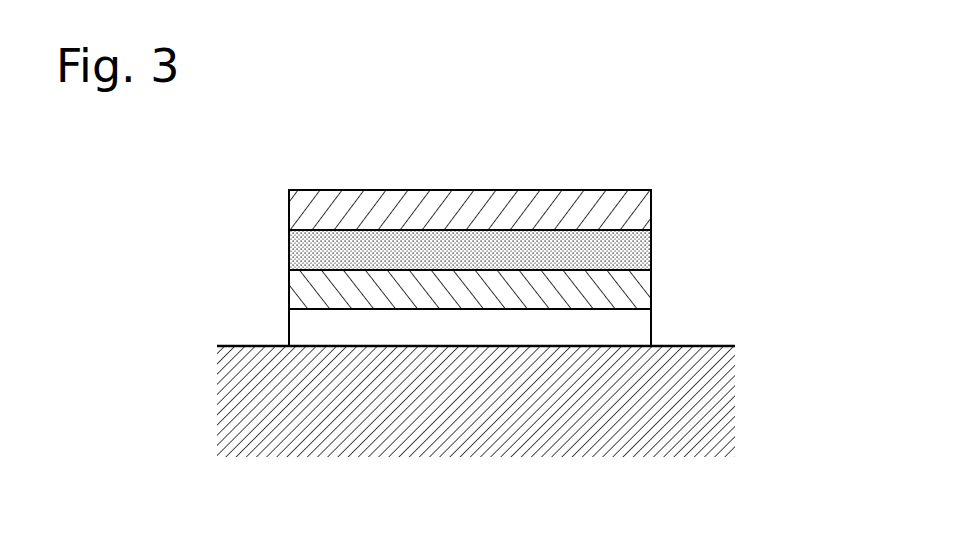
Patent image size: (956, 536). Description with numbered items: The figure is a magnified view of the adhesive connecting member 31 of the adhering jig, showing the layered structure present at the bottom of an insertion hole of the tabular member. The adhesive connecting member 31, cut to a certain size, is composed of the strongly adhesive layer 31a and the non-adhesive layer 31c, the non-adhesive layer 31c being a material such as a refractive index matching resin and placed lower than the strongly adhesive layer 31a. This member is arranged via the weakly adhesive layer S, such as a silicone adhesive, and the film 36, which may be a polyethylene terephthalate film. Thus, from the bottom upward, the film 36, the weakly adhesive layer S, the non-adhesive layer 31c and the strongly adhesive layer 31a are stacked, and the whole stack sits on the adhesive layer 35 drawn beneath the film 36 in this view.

The adhesive connecting member 31 is at (533, 230).
The strongly adhesive layer 31a is at (638, 207).
The non-adhesive layer 31c is at (652, 248).
The weakly adhesive layer S is at (636, 288).
The film 36 is at (637, 328).
The adhesive layer 35 is at (710, 400).